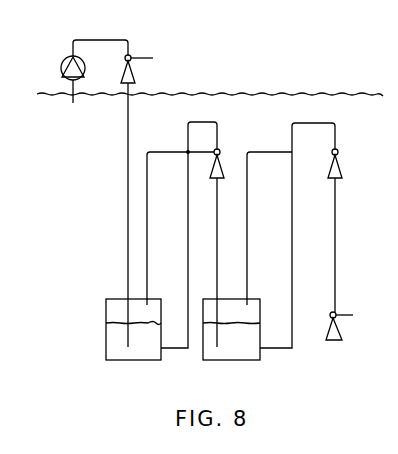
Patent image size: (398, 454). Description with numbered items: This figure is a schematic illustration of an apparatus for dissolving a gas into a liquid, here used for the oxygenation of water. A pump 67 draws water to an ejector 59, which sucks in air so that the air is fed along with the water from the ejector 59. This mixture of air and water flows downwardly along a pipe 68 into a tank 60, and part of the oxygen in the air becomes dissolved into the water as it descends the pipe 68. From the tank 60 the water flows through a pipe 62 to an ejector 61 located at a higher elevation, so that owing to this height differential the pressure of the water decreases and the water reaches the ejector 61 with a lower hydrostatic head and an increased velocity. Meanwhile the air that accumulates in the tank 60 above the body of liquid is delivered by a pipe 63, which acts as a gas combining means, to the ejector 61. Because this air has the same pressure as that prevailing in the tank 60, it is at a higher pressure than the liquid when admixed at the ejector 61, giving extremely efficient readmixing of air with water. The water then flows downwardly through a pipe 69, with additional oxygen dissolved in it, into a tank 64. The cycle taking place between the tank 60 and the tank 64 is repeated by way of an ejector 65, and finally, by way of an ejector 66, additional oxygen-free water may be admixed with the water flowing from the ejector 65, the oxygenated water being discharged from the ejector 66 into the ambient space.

The ejector 59 is at (131, 56).
The tank 60 is at (106, 343).
The ejector 61 is at (220, 150).
The pipe 62 is at (188, 221).
The pipe 63 is at (162, 150).
The tank 64 is at (230, 361).
The ejector 65 is at (338, 152).
The ejector 66 is at (339, 332).
The pump 67 is at (65, 60).
The pipe 68 is at (128, 220).
The pipe 69 is at (217, 220).